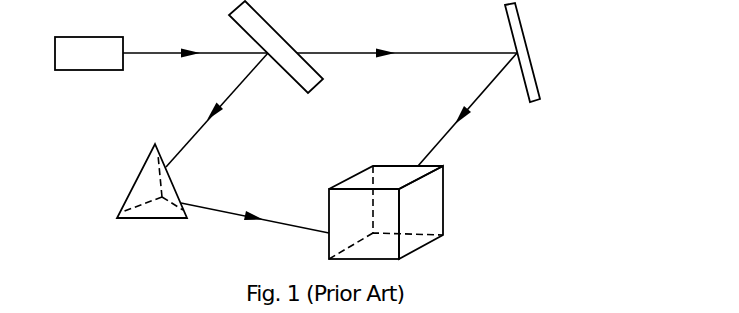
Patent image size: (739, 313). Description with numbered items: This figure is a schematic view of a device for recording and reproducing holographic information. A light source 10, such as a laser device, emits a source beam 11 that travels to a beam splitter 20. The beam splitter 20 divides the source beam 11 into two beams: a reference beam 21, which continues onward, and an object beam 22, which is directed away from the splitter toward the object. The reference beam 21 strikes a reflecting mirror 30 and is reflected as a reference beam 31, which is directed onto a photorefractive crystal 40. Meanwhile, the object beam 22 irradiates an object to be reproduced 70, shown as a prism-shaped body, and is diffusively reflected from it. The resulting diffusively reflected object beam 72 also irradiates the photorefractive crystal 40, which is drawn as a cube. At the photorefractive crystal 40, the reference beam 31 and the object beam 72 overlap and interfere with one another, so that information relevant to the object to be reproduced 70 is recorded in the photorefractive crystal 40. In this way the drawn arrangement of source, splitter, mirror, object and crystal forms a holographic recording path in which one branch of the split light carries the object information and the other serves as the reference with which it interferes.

The light source 10 is at (90, 37).
The source beam 11 is at (197, 88).
The beam splitter 20 is at (284, 33).
The reference beam 21 is at (395, 88).
The object beam 22 is at (250, 132).
The reflecting mirror 30 is at (523, 32).
The reference beam 31 is at (444, 132).
The photorefractive crystal 40 is at (443, 204).
The object to be reproduced 70 is at (129, 195).
The diffusively reflected object beam 72 is at (271, 206).